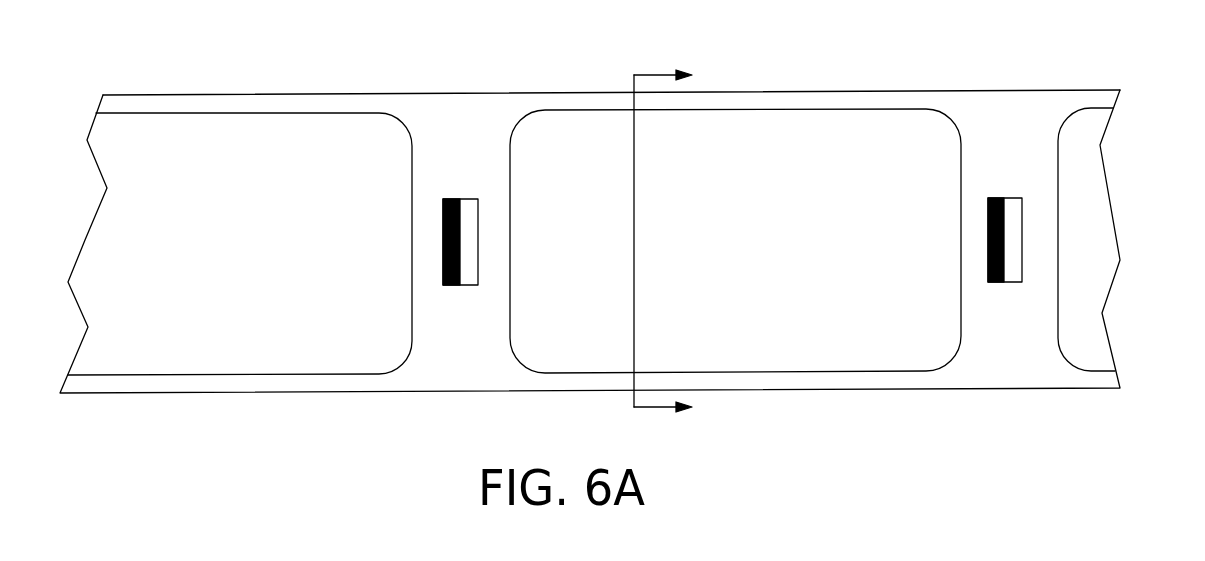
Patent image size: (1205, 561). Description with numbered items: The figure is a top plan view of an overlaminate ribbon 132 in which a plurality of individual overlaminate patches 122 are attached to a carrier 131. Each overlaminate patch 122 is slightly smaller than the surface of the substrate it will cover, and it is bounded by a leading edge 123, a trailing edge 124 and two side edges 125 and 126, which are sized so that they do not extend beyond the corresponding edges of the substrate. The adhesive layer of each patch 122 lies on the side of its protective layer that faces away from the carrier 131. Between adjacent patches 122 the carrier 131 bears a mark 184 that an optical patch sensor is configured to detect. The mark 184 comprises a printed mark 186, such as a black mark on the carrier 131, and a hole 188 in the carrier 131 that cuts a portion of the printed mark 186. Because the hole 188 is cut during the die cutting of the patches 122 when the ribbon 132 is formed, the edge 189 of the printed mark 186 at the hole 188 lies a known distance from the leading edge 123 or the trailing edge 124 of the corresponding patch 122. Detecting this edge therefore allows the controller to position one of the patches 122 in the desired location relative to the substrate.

The overlaminate patch 122 is at (1100, 130).
The leading edge 123 is at (512, 155).
The trailing edge 124 is at (962, 151).
The side edge 125 is at (798, 113).
The side edge 126 is at (795, 373).
The carrier 131 is at (446, 108).
The overlaminate ribbon 132 is at (1034, 57).
The mark 184 is at (493, 219).
The printed mark 186 is at (443, 243).
The hole 188 is at (470, 243).
The edge 189 is at (468, 268).